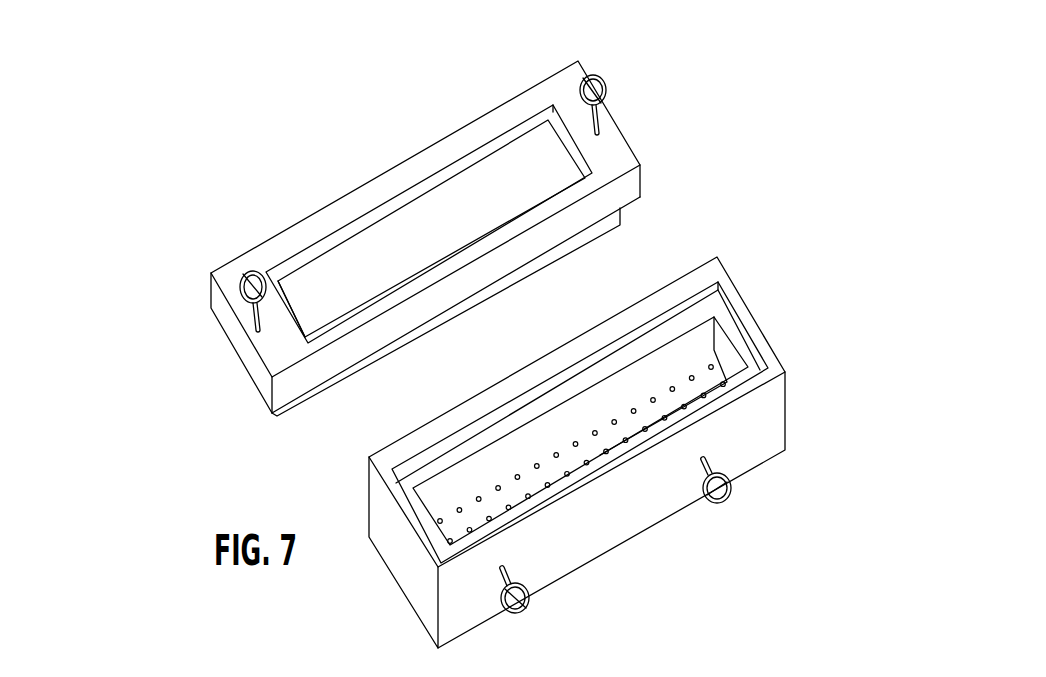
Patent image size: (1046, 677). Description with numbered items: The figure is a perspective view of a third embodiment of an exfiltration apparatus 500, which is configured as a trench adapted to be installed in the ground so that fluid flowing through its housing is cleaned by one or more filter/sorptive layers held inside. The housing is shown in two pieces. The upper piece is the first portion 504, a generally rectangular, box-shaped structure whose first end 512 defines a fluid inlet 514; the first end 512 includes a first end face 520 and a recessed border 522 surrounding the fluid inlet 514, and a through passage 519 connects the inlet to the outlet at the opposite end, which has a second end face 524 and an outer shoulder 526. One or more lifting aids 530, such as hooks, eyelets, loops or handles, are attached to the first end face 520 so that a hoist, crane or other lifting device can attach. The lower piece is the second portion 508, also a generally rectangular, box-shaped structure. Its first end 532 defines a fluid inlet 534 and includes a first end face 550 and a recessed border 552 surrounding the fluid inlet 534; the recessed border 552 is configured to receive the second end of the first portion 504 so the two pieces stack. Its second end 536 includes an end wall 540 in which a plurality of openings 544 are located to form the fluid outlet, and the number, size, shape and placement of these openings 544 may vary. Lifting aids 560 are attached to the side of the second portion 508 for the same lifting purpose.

The exfiltration apparatus 500 is at (467, 340).
The first portion 504 is at (237, 342).
The second portion 508 is at (380, 513).
The first end 512 is at (364, 150).
The fluid inlet 514 is at (455, 207).
The through passage 519 is at (418, 251).
The first end face 520 is at (537, 98).
The recessed border 522 is at (288, 267).
The second end face 524 is at (298, 413).
The outer shoulder 526 is at (272, 416).
The lifting aids 530 is at (604, 76).
The first end 532 is at (547, 343).
The fluid inlet 534 is at (617, 397).
The second end 536 is at (670, 558).
The end wall 540 is at (683, 393).
The openings 544 is at (724, 361).
The first end face 550 is at (680, 285).
The recessed border 552 is at (722, 318).
The lifting aids 560 is at (733, 499).